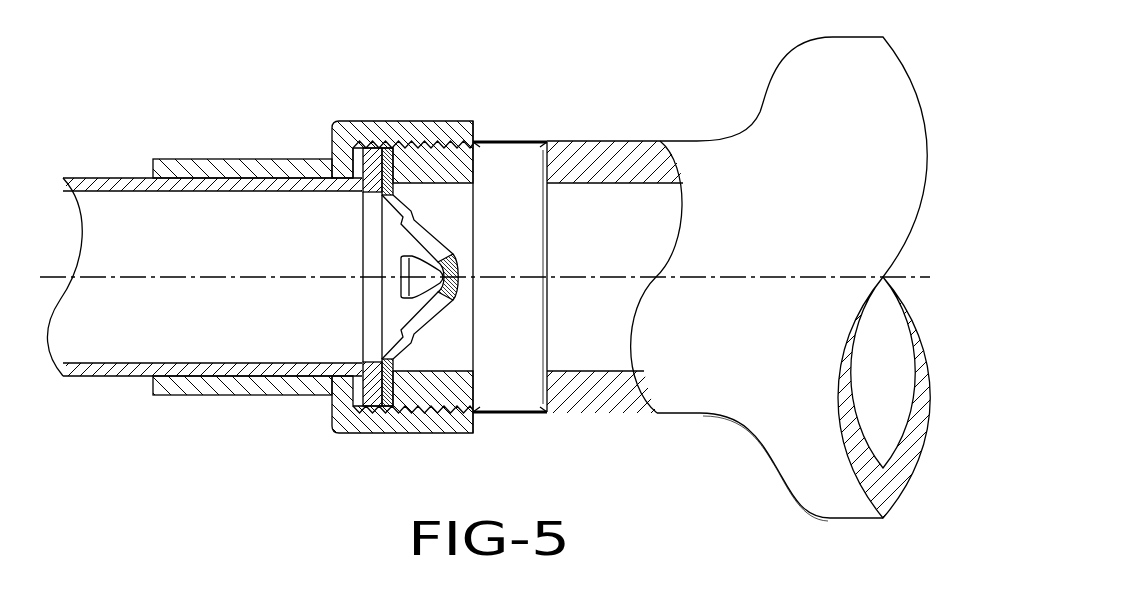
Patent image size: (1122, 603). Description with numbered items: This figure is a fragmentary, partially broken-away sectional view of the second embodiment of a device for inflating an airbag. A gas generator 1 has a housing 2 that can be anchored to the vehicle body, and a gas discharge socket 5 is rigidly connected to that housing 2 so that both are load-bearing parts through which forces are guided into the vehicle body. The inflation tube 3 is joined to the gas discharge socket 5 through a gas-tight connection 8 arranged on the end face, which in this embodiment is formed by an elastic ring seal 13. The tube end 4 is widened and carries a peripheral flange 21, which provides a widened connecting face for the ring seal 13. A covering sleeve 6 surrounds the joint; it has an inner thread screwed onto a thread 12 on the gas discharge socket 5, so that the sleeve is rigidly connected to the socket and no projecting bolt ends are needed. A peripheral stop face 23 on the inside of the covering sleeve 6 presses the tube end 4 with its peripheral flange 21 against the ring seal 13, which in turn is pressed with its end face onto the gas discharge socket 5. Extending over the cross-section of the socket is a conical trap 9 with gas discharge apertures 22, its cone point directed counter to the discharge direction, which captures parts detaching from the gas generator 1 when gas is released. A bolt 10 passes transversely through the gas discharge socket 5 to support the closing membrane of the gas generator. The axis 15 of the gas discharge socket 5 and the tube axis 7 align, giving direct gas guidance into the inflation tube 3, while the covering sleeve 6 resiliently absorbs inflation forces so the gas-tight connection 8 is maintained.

The gas generator 1 is at (766, 54).
The housing 2 is at (845, 52).
The inflation tube 3 is at (118, 377).
The tube end 4 is at (257, 182).
The gas discharge socket 5 is at (598, 400).
The covering sleeve 6 is at (463, 427).
The tube axis 7 is at (250, 277).
The gas-tight connection 8 is at (382, 146).
The trap 9 is at (418, 318).
The bolt 10 is at (509, 165).
The thread 12 is at (433, 142).
The ring seal 13 is at (382, 392).
The axis of the gas discharge socket 15 is at (730, 277).
The peripheral flange 21 is at (345, 396).
The gas discharge apertures 22 is at (420, 240).
The peripheral stop face 23 is at (360, 145).